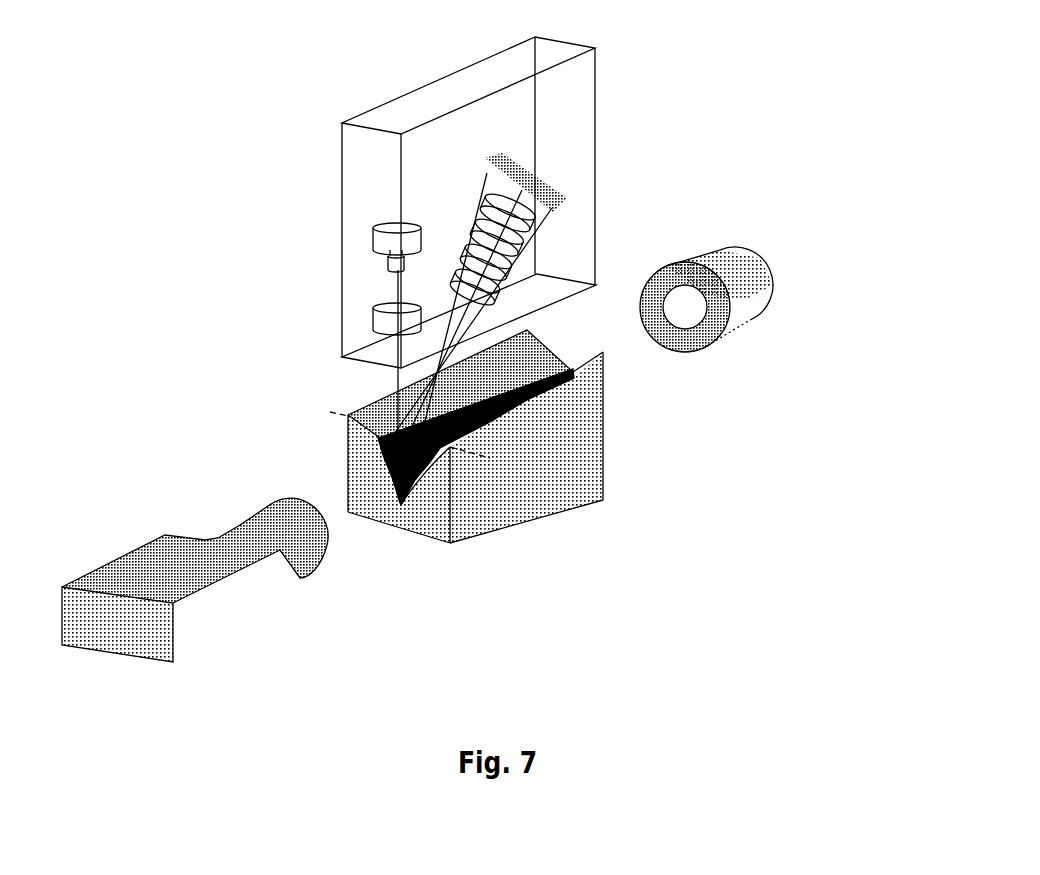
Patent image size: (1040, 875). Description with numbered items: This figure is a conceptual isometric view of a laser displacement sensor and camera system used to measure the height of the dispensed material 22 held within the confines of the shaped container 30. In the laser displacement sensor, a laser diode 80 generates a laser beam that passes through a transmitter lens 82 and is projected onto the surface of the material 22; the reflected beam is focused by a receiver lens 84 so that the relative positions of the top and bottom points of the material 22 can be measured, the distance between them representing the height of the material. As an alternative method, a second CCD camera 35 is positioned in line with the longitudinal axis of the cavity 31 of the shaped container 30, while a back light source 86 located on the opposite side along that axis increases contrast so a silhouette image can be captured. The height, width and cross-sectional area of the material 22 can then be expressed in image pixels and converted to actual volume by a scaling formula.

The laser diode 80 is at (405, 167).
The transmitter lens 82 is at (405, 245).
The receiver lens 84 is at (588, 181).
The back light source 86 is at (792, 277).
The shaped container 30 is at (568, 464).
The dispensed material 22 is at (540, 401).
The cavity 31 is at (361, 410).
The second CCD camera 35 is at (190, 514).